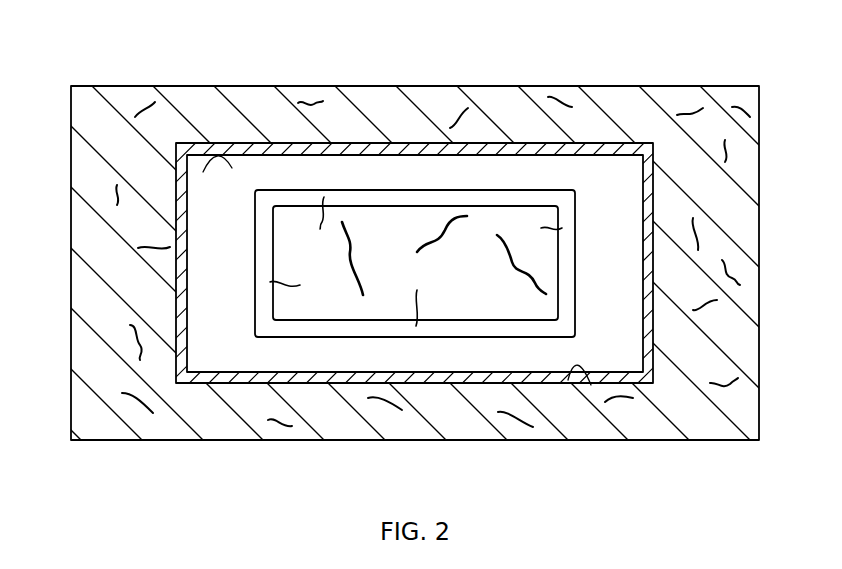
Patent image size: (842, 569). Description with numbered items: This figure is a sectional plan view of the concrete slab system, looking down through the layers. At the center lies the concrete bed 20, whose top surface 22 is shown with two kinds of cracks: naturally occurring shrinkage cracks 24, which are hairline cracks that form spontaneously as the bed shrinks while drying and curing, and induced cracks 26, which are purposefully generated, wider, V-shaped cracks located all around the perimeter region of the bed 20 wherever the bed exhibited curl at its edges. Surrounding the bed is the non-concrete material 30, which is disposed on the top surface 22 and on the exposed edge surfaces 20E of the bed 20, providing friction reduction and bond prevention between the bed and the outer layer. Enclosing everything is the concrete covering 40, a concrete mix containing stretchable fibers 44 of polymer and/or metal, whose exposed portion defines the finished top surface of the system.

The concrete bed 20 is at (355, 355).
The exposed edge surfaces 20E is at (203, 172).
The top surface 22 is at (455, 262).
The shrinkage cracks 24 is at (428, 242).
The induced cracks 26 is at (416, 261).
The non-concrete material 30 is at (522, 142).
The concrete covering 40 is at (160, 432).
The stretchable fibers 44 is at (305, 103).